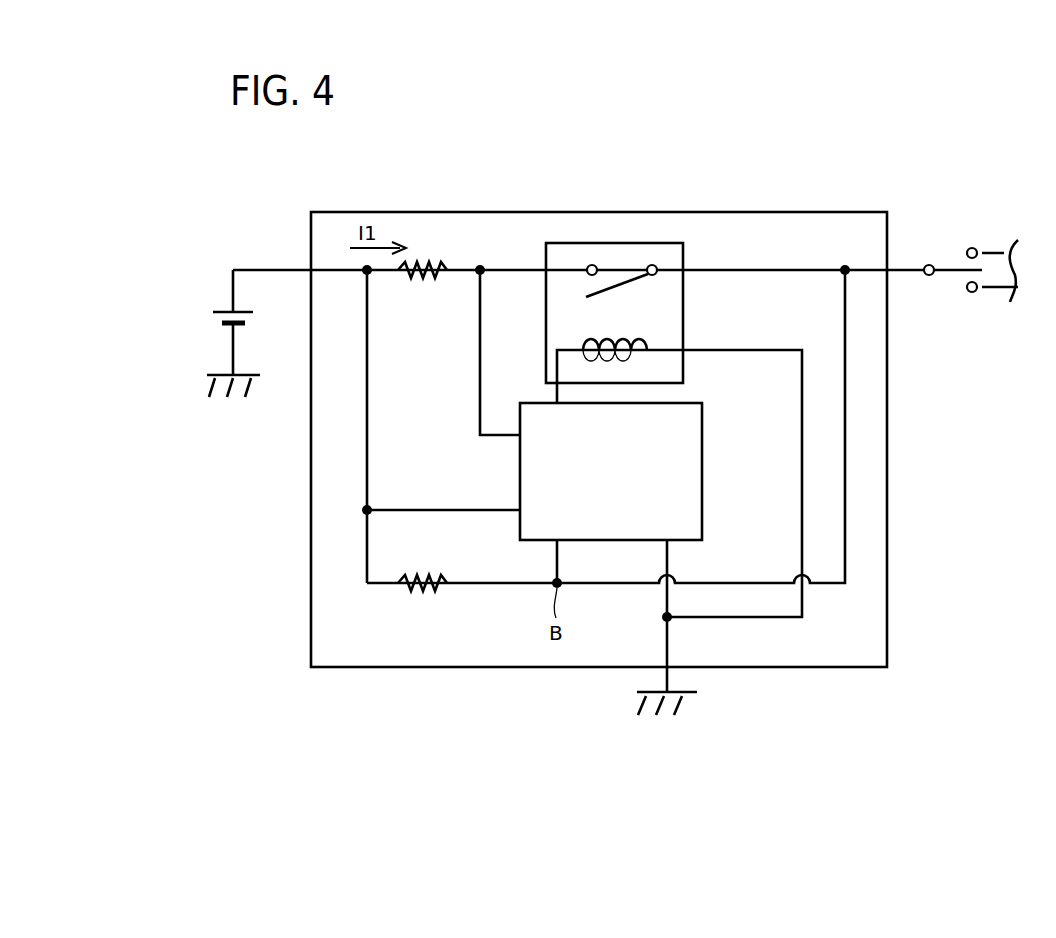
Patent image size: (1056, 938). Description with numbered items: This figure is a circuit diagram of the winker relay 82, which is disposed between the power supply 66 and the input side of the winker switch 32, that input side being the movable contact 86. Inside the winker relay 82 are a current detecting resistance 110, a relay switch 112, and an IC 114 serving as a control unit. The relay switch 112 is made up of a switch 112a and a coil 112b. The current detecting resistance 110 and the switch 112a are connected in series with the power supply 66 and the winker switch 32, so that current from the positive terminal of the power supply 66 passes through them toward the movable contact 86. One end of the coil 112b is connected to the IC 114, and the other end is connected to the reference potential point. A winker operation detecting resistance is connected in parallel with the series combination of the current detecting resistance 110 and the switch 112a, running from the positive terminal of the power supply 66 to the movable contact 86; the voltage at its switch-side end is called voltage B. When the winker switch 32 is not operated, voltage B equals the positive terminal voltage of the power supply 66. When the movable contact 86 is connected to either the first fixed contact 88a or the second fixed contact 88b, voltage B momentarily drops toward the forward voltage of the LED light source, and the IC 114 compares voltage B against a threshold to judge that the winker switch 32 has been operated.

The winker relay 82 is at (512, 212).
The current detecting resistance 110 is at (425, 262).
The relay switch 112 is at (726, 251).
The switch 112a is at (630, 283).
The coil 112b is at (650, 343).
The IC 114 is at (702, 470).
The power supply 66 is at (220, 308).
The movable contact 86 is at (954, 262).
The first fixed contact 88a is at (972, 293).
The second fixed contact 88b is at (971, 247).
The winker switch 32 is at (952, 302).